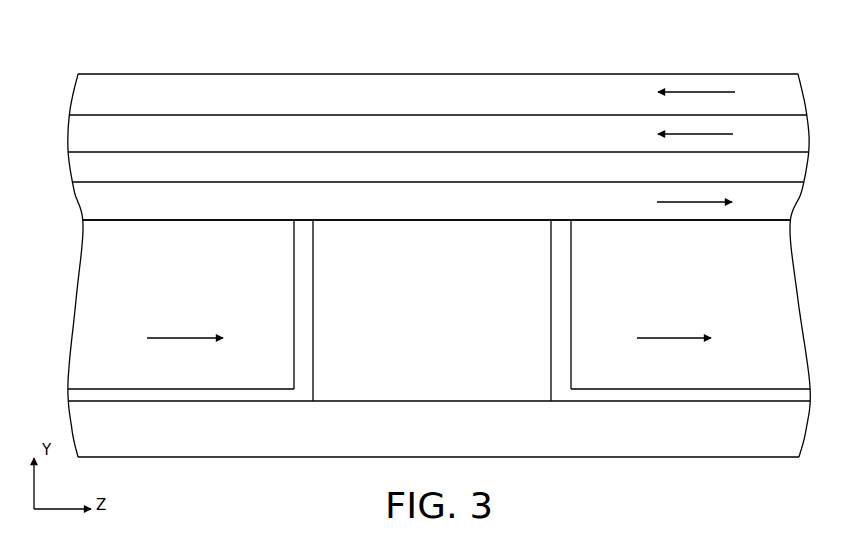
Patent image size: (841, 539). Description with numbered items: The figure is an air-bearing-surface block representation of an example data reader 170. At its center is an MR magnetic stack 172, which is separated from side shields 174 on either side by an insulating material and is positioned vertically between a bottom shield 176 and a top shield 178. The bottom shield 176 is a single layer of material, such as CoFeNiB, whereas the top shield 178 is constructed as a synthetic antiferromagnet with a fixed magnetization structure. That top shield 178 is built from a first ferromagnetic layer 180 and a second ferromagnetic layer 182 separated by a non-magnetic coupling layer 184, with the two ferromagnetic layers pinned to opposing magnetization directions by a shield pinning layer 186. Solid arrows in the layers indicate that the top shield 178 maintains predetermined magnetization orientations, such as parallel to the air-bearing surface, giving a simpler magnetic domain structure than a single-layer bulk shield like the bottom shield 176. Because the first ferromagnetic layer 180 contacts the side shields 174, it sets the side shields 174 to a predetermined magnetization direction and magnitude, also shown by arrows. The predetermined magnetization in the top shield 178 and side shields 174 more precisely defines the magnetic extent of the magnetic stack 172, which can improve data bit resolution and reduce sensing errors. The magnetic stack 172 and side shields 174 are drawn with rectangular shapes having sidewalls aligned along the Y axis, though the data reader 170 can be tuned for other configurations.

The data reader 170 is at (124, 49).
The MR magnetic stack 172 is at (432, 310).
The side shields 174 is at (439, 304).
The bottom shield 176 is at (439, 429).
The top shield 178 is at (72, 74).
The first ferromagnetic layer 180 is at (437, 205).
The second ferromagnetic layer 182 is at (438, 138).
The non-magnetic coupling layer 184 is at (438, 169).
The shield pinning layer 186 is at (438, 99).